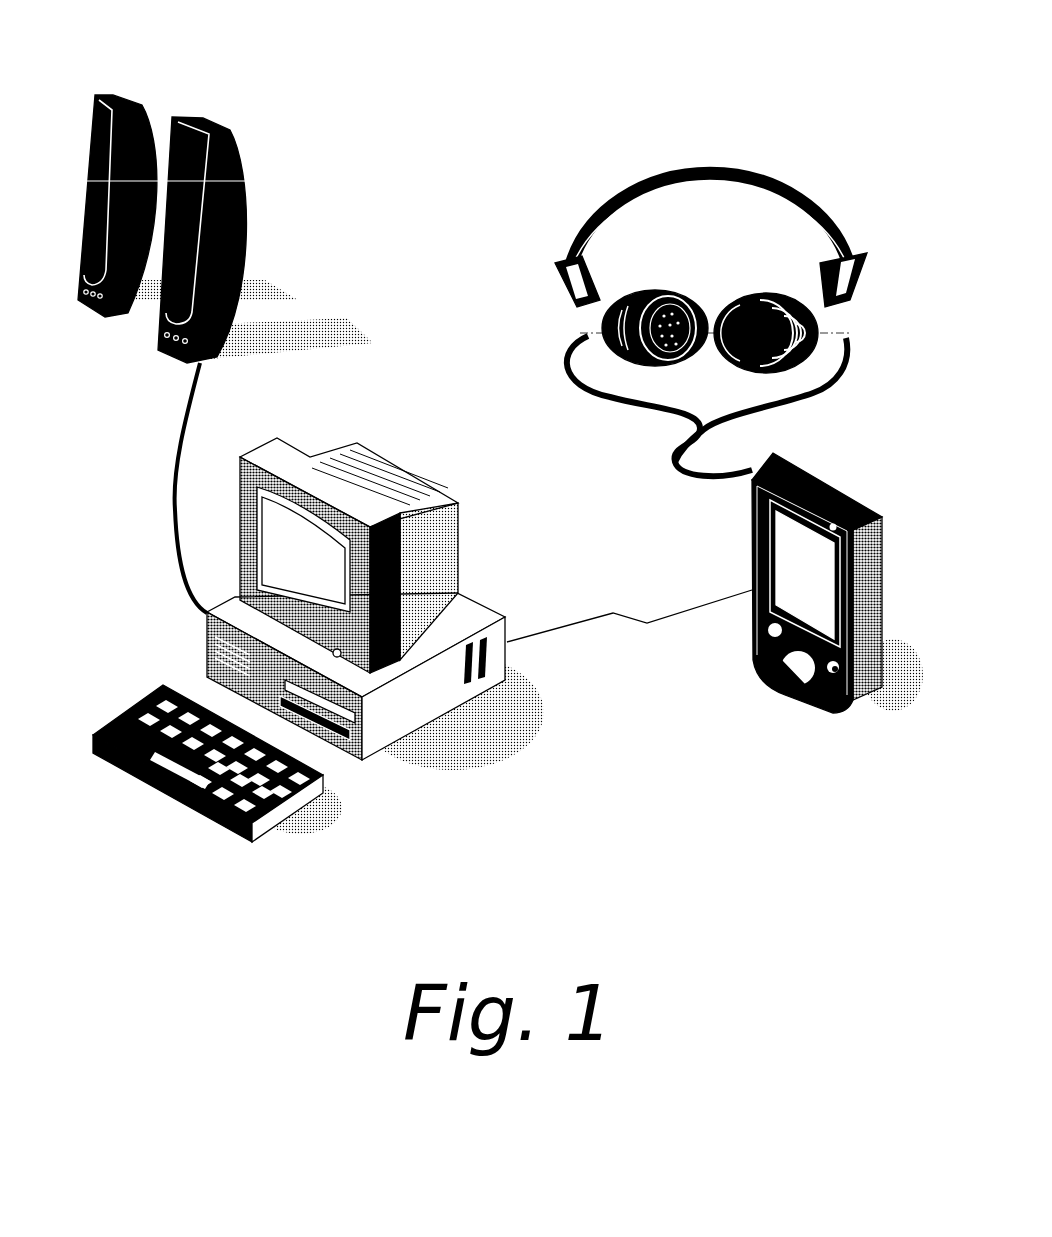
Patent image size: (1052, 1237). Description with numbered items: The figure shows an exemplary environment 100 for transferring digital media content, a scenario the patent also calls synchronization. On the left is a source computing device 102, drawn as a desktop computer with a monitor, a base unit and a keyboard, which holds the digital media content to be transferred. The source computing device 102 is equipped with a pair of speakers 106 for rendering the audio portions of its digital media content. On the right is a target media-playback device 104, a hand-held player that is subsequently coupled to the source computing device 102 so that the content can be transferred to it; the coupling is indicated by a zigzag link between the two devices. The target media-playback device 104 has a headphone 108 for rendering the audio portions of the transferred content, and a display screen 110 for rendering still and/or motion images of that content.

The exemplary environment 100 is at (595, 58).
The source computing device 102 is at (480, 602).
The target media-playback device 104 is at (804, 583).
The speakers 106 is at (215, 128).
The headphone 108 is at (553, 277).
The display screen 110 is at (770, 555).